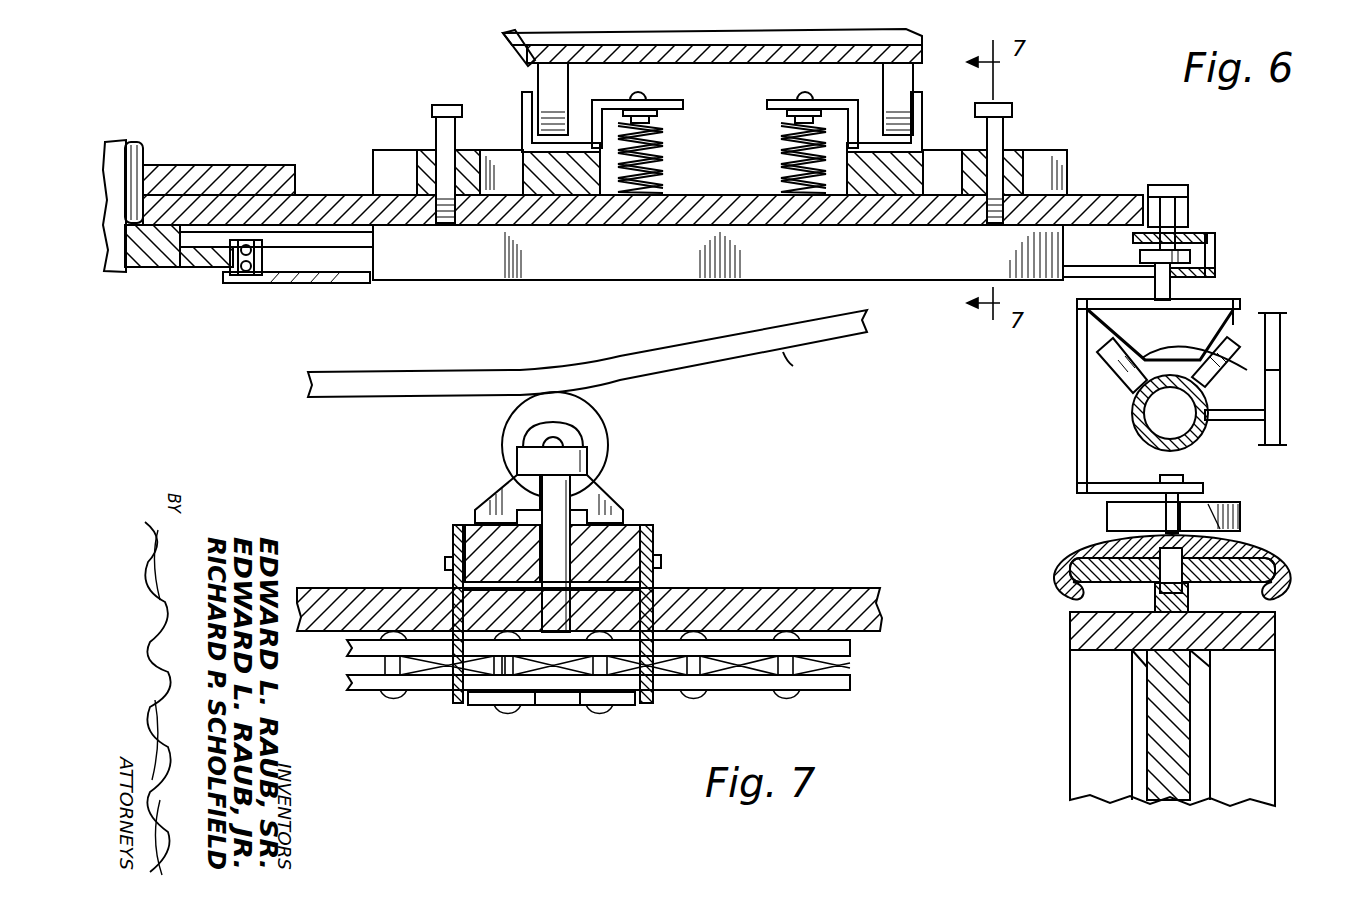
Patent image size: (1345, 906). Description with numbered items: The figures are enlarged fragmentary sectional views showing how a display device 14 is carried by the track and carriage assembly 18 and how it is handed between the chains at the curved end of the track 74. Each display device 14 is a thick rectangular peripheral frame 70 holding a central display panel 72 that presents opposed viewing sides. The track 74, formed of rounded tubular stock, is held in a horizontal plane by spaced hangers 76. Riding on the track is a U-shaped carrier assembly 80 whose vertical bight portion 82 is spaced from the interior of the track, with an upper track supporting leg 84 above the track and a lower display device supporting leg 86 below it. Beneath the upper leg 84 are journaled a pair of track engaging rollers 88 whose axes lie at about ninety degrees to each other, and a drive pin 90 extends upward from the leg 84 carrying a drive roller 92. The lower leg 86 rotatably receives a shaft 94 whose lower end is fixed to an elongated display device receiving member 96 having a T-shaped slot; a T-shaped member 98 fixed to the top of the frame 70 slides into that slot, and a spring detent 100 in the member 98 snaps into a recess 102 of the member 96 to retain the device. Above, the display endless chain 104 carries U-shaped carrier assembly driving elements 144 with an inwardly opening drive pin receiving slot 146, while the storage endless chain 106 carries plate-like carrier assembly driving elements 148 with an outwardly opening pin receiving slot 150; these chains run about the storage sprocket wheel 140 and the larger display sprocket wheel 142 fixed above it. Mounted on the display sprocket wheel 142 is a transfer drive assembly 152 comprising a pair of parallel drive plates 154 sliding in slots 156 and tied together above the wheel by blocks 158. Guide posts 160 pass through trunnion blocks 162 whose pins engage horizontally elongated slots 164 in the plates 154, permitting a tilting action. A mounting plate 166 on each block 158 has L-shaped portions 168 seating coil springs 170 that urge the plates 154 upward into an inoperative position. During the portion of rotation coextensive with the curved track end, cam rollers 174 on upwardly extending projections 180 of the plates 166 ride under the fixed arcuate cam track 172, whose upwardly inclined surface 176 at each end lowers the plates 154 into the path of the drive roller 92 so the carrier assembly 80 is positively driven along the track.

In FIG. 6, the display device 14 is at (1131, 728).
In FIG. 6, the track and carriage assembly 18 is at (1200, 510).
In FIG. 6, the peripheral frame 70 is at (1083, 630).
In FIG. 6, the central display panel 72 is at (1167, 733).
In FIG. 6, the track 74 is at (1157, 443).
In FIG. 6, the hanger 76 is at (1277, 372).
In FIG. 6, the carrier assembly 80 is at (1134, 385).
In FIG. 6, the bight portion 82 is at (1083, 440).
In FIG. 6, the upper track supporting leg 84 is at (1207, 300).
In FIG. 6, the lower display device supporting leg 86 is at (1165, 478).
In FIG. 6, the track engaging roller 88 is at (1172, 371).
In FIG. 6, the drive pin 90 is at (1153, 287).
In FIG. 6, the drive roller 92 is at (1213, 250).
In FIG. 6, the shaft 94 is at (1173, 510).
In FIG. 6, the display device receiving member 96 is at (1063, 555).
In FIG. 6, the T-shaped member 98 is at (1123, 577).
In FIG. 6, the spring detent 100 is at (1173, 573).
In FIG. 6, the recess 102 is at (1240, 520).
In FIG. 6, the display endless chain 104 is at (1180, 187).
In FIG. 6, the storage endless chain 106 is at (253, 248).
In FIG. 7, the storage endless chain 106 is at (390, 697).
In FIG. 6, the storage sprocket wheel 140 is at (183, 268).
In FIG. 7, the storage sprocket wheel 140 is at (580, 692).
In FIG. 6, the display sprocket wheel 142 is at (226, 180).
In FIG. 7, the display sprocket wheel 142 is at (800, 590).
In FIG. 6, the carrier assembly driving element 144 is at (1207, 237).
In FIG. 6, the drive pin receiving slot 146 is at (1214, 277).
In FIG. 6, the carrier assembly driving element 148 is at (232, 274).
In FIG. 7, the carrier assembly driving element 148 is at (490, 705).
In FIG. 6, the pin receiving slot 150 is at (297, 281).
In FIG. 7, the pin receiving slot 150 is at (535, 705).
In FIG. 6, the transfer drive assembly 152 is at (365, 160).
In FIG. 7, the transfer drive assembly 152 is at (667, 527).
In FIG. 6, the drive plate 154 is at (630, 267).
In FIG. 7, the drive plate 154 is at (437, 693).
In FIG. 6, the slot 156 is at (371, 240).
In FIG. 7, the slot 156 is at (447, 590).
In FIG. 6, the block 158 is at (517, 207).
In FIG. 6, the guide post 160 is at (435, 118).
In FIG. 7, the guide post 160 is at (562, 533).
In FIG. 6, the trunnion block 162 is at (417, 180).
In FIG. 7, the trunnion block 162 is at (485, 547).
In FIG. 7, the horizontally elongated slot 164 is at (447, 558).
In FIG. 6, the mounting plate 166 is at (780, 145).
In FIG. 6, the L-shaped portion 168 is at (793, 95).
In FIG. 6, the coil spring 170 is at (780, 123).
In FIG. 6, the arcuate cam track 172 is at (505, 46).
In FIG. 7, the arcuate cam track 172 is at (437, 372).
In FIG. 6, the cam roller 174 is at (545, 78).
In FIG. 7, the cam roller 174 is at (580, 418).
In FIG. 7, the upwardly inclined surface 176 is at (812, 367).
In FIG. 6, the projection 180 is at (532, 121).
In FIG. 7, the projection 180 is at (507, 470).